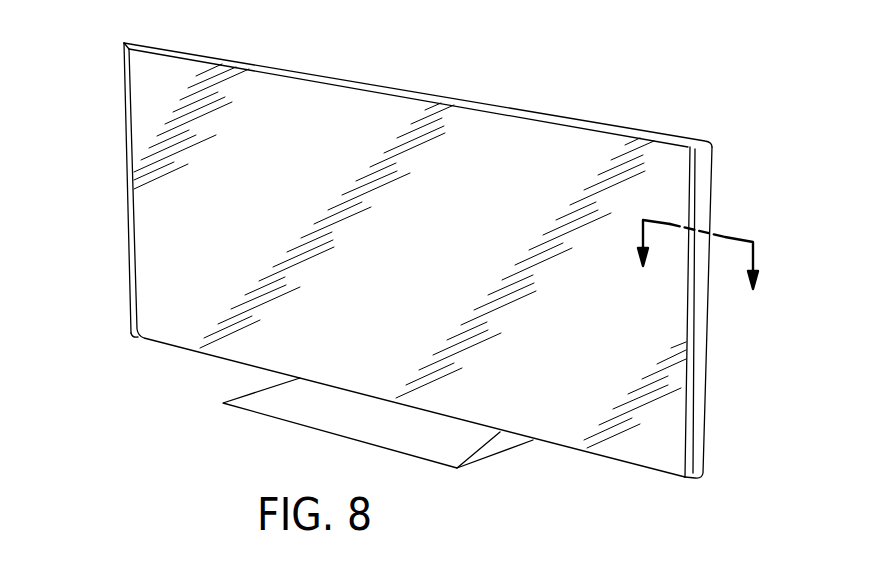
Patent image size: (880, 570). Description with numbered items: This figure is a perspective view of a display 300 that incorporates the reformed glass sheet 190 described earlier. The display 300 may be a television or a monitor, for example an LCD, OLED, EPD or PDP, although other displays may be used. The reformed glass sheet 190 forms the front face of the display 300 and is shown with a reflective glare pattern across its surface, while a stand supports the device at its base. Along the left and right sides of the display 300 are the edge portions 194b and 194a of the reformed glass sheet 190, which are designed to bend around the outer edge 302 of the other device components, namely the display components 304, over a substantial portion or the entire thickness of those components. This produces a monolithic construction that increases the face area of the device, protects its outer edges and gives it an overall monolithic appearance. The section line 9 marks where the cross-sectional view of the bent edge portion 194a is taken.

The display 300 is at (580, 98).
The display components 304 is at (300, 73).
The outer edge 302 is at (708, 147).
The edge portion 194a is at (705, 405).
The edge portion 194b is at (124, 103).
The reformed glass sheet 190 is at (158, 336).
The section line 9- 9 is at (698, 281).